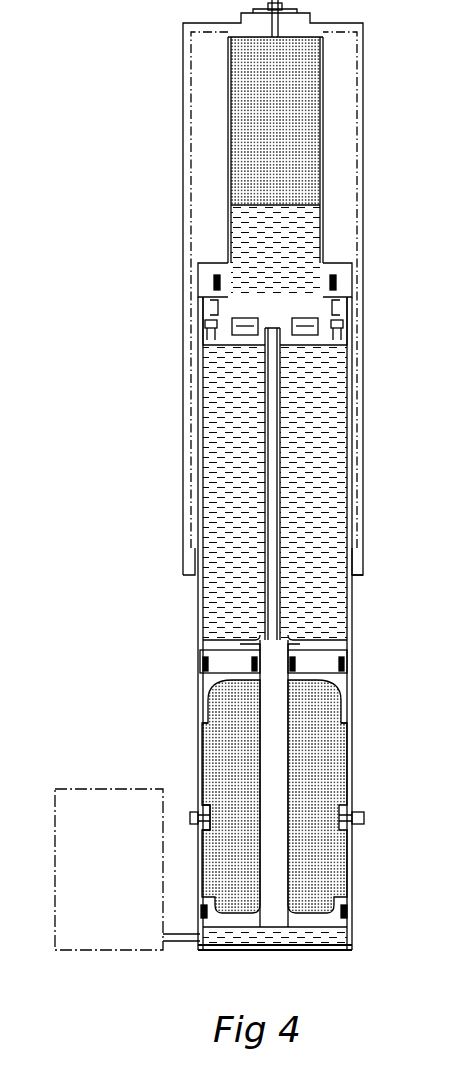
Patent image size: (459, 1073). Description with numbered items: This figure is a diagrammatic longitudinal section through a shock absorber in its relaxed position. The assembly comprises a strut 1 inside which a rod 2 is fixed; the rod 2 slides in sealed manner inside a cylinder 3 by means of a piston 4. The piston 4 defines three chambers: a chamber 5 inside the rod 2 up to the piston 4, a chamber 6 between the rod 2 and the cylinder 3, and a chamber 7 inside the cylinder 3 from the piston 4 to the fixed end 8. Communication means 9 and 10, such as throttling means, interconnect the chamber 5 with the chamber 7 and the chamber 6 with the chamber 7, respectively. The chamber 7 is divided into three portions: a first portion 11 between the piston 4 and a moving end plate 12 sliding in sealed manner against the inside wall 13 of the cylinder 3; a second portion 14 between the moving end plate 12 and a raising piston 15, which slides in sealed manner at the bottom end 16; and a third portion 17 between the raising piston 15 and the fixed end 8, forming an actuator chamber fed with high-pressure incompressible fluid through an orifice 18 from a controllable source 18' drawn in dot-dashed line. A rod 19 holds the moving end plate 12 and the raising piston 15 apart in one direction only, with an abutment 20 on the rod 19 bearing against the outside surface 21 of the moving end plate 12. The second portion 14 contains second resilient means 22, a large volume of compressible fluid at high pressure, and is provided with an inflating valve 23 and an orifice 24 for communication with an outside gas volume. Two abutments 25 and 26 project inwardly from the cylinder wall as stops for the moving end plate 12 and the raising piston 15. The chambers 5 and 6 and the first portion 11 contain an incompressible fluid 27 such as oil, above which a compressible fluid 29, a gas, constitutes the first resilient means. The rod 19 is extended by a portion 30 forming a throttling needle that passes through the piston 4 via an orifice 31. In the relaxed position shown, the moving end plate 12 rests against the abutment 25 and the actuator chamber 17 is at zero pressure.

The strut 1 is at (184, 93).
The rod 2 is at (323, 155).
The cylinder 3 is at (338, 615).
The piston 4 is at (325, 340).
The chamber 5 is at (310, 251).
The chamber 6 is at (344, 314).
The chamber 7 is at (325, 508).
The fixed end 8 is at (340, 947).
The communication means 9 is at (307, 340).
The communication means 10 is at (210, 340).
The first portion 11 is at (246, 501).
The moving end plate 12 is at (337, 685).
The inside wall 13 is at (200, 612).
The second portion 14 is at (326, 777).
The raising piston 15 is at (333, 900).
The bottom end 16 is at (360, 841).
The third portion 17 is at (317, 936).
The orifice 18 is at (191, 958).
The controllable source 18' is at (89, 869).
The rod 19 is at (277, 858).
The abutment 20 is at (298, 643).
The outside surface 21 is at (217, 650).
The second resilient means 22 is at (332, 762).
The inflating valve 23 is at (362, 812).
The orifice 24 is at (198, 822).
The abutment 25 is at (205, 732).
The abutment 26 is at (207, 808).
The incompressible fluid 27 is at (235, 440).
The compressible fluid 29 is at (292, 157).
The portion 30 is at (277, 423).
The orifice 31 is at (263, 338).